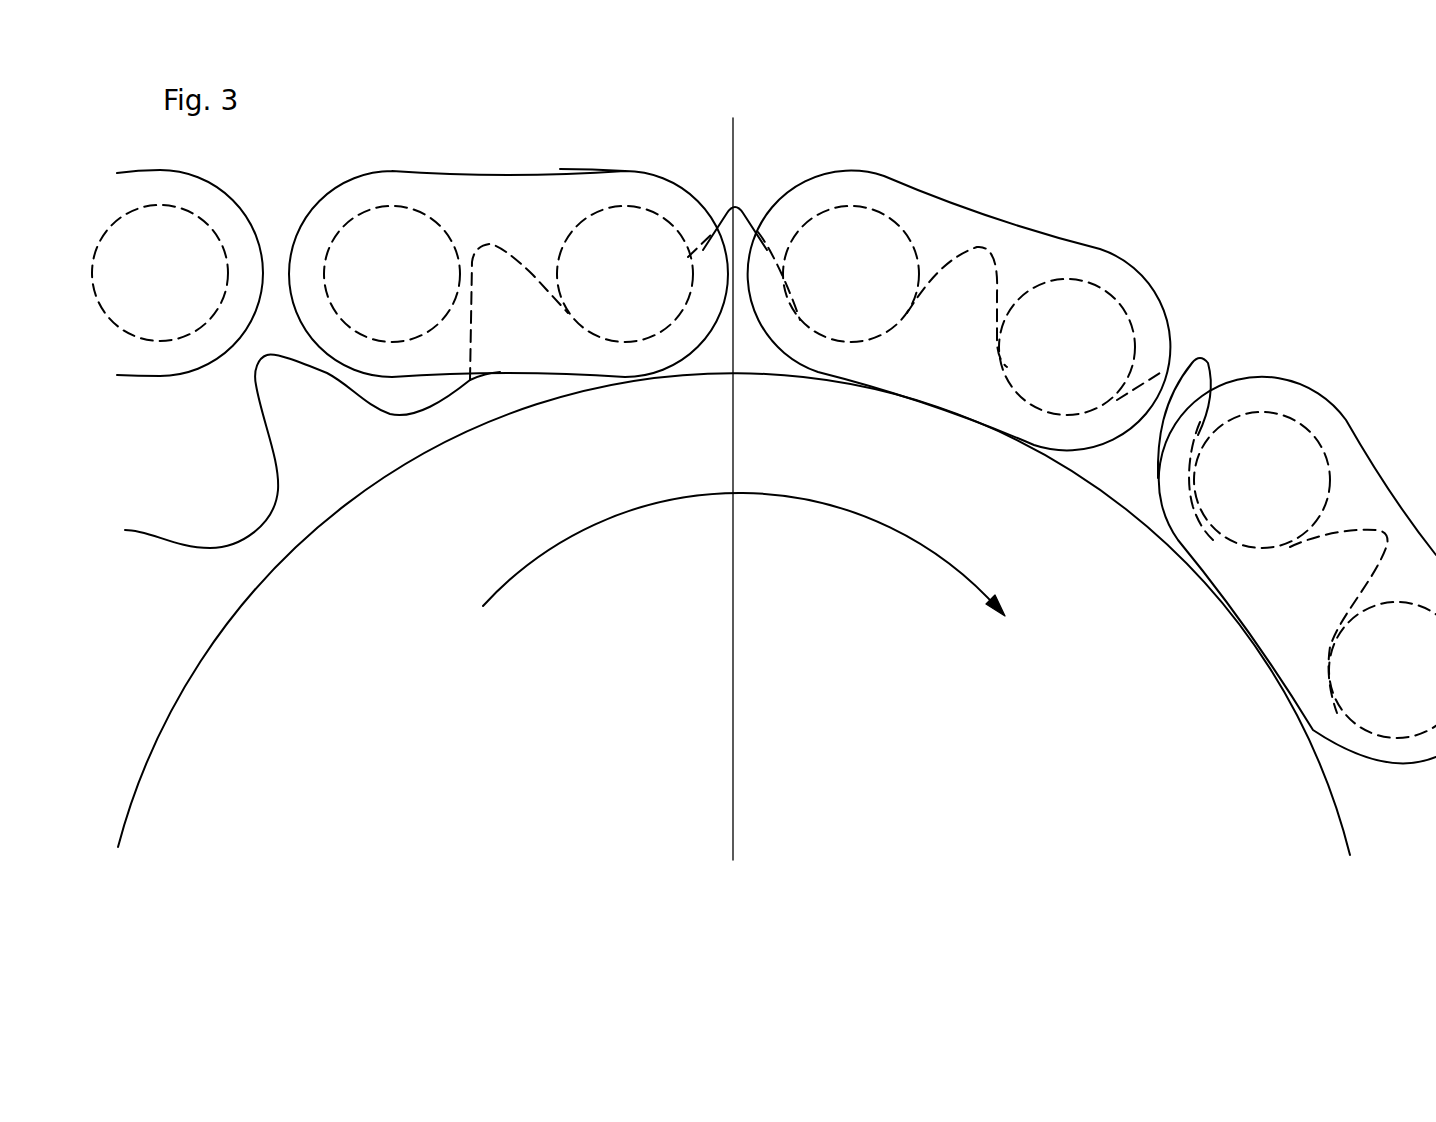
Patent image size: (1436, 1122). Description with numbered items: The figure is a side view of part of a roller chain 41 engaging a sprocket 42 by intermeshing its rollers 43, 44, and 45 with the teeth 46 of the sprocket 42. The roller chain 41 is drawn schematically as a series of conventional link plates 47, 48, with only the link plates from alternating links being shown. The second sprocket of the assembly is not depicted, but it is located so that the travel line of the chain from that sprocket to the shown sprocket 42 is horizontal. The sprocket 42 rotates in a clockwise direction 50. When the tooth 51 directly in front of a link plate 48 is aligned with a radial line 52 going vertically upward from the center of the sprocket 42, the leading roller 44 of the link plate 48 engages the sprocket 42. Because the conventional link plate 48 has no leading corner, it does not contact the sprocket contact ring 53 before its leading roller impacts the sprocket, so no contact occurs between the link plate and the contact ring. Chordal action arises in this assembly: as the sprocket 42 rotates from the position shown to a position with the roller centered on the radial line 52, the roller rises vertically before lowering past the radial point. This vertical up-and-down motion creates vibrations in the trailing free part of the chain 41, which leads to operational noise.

The roller chain 41 is at (764, 417).
The sprocket 42 is at (734, 482).
The roller 43 is at (1057, 353).
The leading roller 44 is at (630, 295).
The roller 45 is at (415, 240).
The teeth 46 is at (278, 373).
The link plate 47 is at (252, 198).
The link plate 48 is at (638, 170).
The clockwise direction 50 is at (744, 554).
The tooth 51 is at (748, 205).
The radial line 52 is at (758, 489).
The sprocket contact ring 53 is at (245, 603).